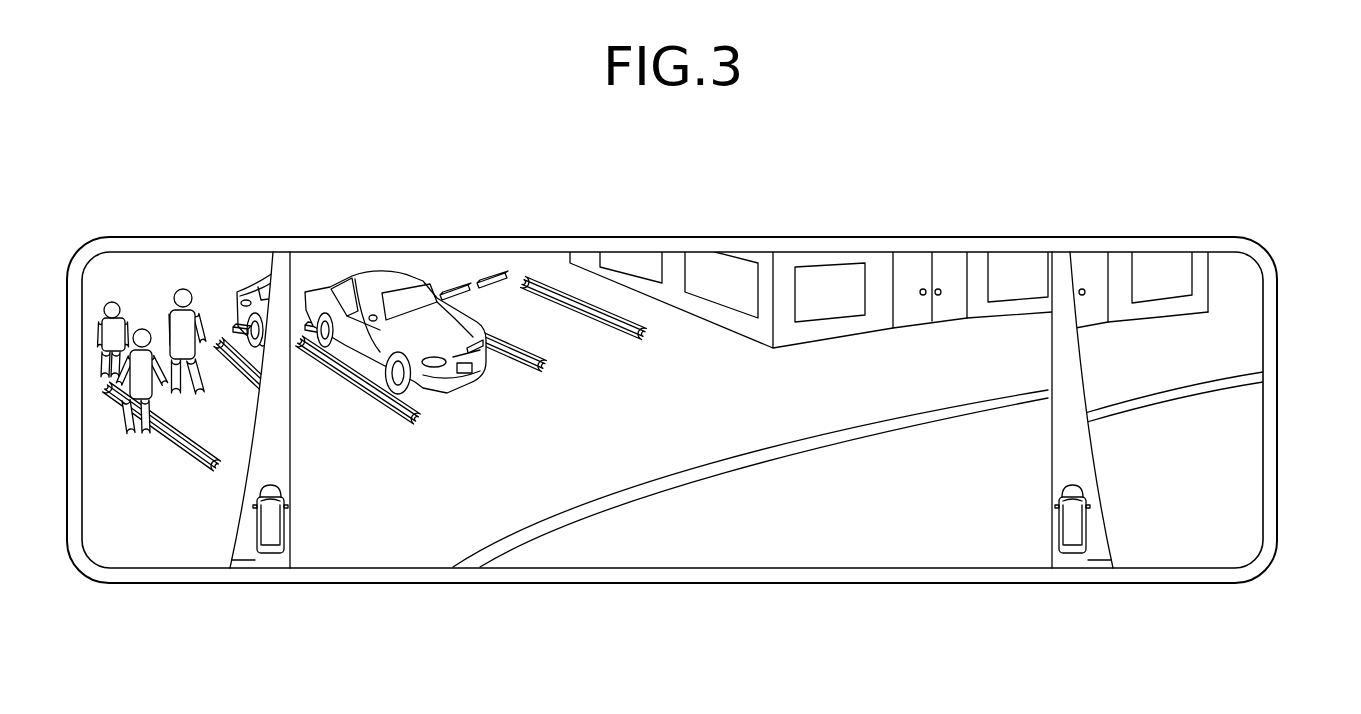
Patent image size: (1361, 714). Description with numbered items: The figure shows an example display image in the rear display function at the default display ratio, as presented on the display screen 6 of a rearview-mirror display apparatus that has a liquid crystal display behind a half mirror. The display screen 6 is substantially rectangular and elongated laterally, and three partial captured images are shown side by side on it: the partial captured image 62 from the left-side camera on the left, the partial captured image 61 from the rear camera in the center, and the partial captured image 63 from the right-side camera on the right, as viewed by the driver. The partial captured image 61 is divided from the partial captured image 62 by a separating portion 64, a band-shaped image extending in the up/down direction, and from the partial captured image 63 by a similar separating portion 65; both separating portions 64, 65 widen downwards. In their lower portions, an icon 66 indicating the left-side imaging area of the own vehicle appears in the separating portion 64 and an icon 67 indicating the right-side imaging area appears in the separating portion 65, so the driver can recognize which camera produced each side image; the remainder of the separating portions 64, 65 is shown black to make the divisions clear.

The display screen 6 is at (1278, 335).
The partial captured image 61 is at (670, 260).
The partial captured image 62 is at (177, 262).
The partial captured image 63 is at (1224, 262).
The separating portion 64 is at (273, 453).
The separating portion 65 is at (1067, 455).
The icon 66 is at (272, 533).
The icon 67 is at (1072, 533).